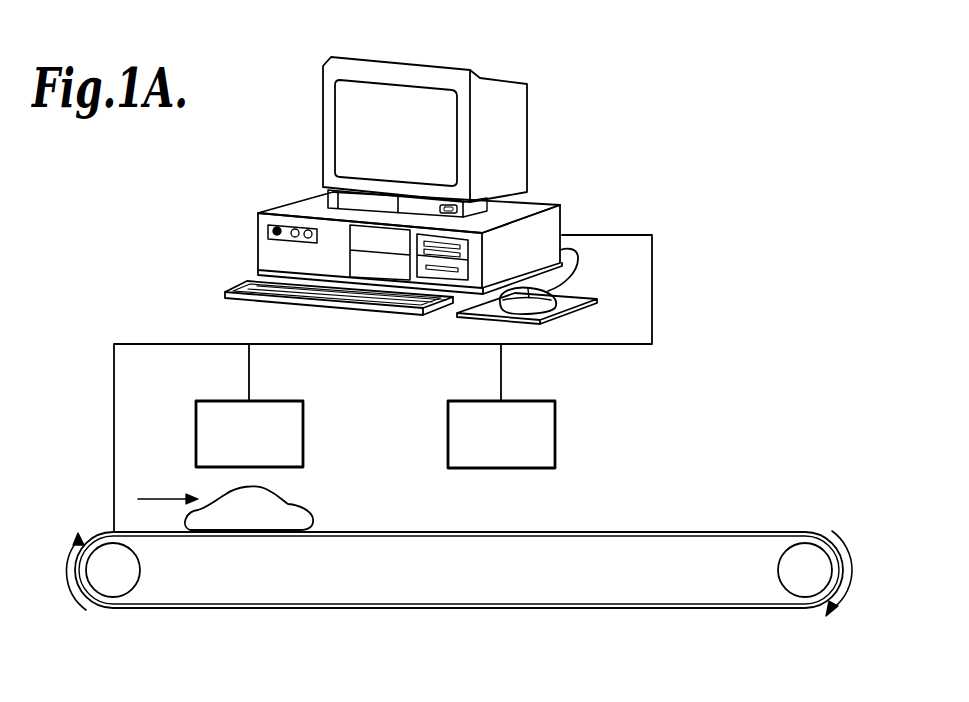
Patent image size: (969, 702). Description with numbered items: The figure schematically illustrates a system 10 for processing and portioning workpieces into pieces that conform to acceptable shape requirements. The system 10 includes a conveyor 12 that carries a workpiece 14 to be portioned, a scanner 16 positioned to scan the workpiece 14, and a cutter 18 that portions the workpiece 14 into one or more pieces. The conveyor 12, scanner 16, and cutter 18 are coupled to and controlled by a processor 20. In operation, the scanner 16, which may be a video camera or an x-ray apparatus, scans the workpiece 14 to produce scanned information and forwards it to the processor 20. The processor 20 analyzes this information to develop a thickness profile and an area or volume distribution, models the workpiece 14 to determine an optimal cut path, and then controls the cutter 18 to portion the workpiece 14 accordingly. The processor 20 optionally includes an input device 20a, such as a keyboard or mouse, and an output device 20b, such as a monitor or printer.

The system 10 is at (716, 191).
The conveyor 12 is at (270, 610).
The workpiece 14 is at (283, 503).
The scanner 16 is at (196, 430).
The cutter 18 is at (472, 401).
The processor 20 is at (262, 233).
The input device 20a is at (216, 301).
The output device 20b is at (480, 78).